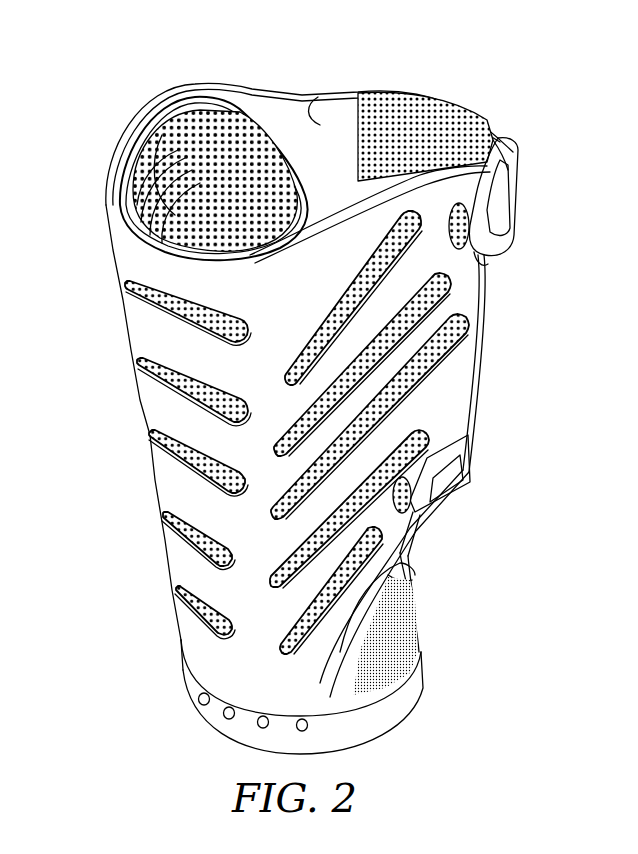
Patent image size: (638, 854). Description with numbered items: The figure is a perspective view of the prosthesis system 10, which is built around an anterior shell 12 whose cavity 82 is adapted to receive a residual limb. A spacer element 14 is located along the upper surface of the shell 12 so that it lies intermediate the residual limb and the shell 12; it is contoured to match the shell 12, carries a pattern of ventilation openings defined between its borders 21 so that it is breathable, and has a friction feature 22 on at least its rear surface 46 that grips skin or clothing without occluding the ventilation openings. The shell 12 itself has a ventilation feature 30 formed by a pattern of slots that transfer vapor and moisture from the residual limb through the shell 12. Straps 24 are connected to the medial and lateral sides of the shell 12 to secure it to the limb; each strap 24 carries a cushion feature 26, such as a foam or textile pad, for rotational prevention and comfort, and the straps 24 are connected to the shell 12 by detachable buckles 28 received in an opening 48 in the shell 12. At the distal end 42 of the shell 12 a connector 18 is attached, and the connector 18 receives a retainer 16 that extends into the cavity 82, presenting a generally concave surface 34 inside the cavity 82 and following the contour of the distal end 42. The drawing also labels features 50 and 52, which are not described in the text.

The prosthesis system 10 is at (122, 548).
The anterior shell 12 is at (483, 290).
The spacer element 14 is at (222, 135).
The retainer 16 is at (398, 633).
The connector 18 is at (421, 680).
The borders 21 is at (188, 105).
The friction feature 22 is at (180, 178).
The straps 24 is at (320, 95).
The cushion feature 26 is at (460, 102).
The buckles 28 is at (493, 217).
The ventilation feature 30 is at (462, 345).
The concave surface 34 is at (393, 571).
The distal end 42 is at (230, 667).
The rear surface 46 is at (176, 214).
The opening 48 is at (410, 540).
The strap tail 50 is at (493, 253).
The holes 52 is at (258, 721).
The cavity 82 is at (342, 193).